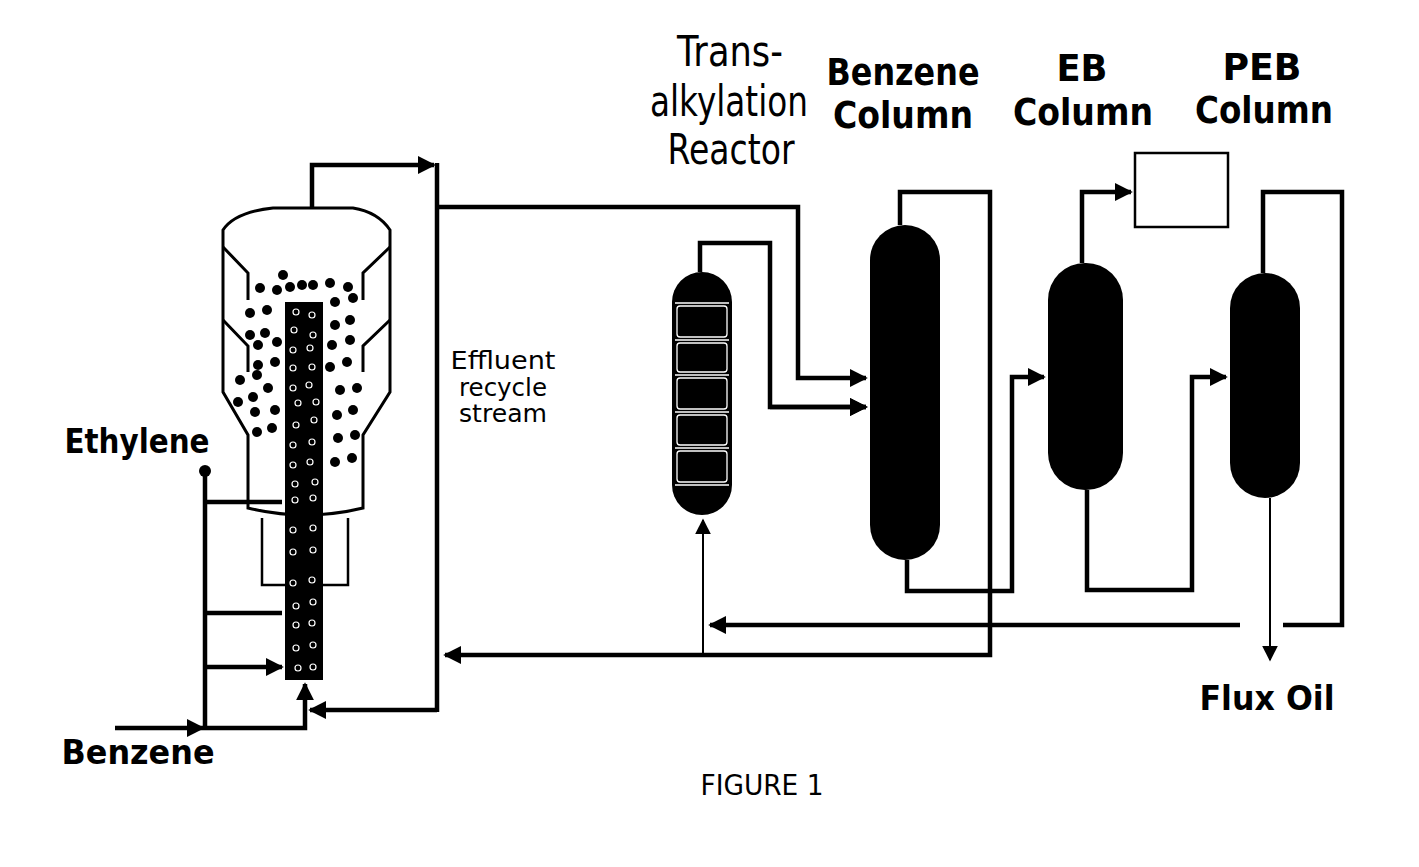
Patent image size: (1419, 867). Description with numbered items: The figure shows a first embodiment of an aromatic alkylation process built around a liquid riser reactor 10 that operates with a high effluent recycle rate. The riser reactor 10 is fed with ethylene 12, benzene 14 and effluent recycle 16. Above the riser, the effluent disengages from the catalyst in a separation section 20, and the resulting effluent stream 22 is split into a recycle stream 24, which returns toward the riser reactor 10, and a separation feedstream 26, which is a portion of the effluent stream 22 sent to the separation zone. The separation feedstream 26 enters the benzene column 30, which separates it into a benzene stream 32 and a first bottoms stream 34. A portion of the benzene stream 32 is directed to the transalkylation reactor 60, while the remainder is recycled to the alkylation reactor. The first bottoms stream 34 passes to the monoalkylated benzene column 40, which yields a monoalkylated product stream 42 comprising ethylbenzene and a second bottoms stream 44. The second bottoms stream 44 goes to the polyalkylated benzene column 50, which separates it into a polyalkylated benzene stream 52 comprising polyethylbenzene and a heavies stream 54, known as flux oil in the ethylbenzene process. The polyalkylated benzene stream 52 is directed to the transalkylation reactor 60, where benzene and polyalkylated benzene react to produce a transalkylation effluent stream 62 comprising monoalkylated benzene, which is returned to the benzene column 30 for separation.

The riser reactor 10 is at (325, 622).
The ethylene feed 12 is at (204, 492).
The benzene feed 14 is at (160, 725).
The effluent recycle 16 is at (350, 712).
The separation section 20 is at (221, 306).
The effluent stream 22 is at (382, 162).
The recycle stream 24 is at (440, 302).
The separation feedstream 26 is at (520, 206).
The benzene column 30 is at (940, 300).
The benzene stream 32 is at (950, 192).
The first bottoms stream 34 is at (930, 592).
The monoalkylated benzene column 40 is at (1122, 310).
The product stream 42 is at (1090, 192).
The second bottoms stream 44 is at (1128, 590).
The polyalkylated benzene column 50 is at (1300, 312).
The polyalkylated benzene stream 52 is at (1315, 192).
The heavies stream 54 is at (1270, 562).
The transalkylation reactor 60 is at (672, 430).
The transalkylation effluent stream 62 is at (810, 407).